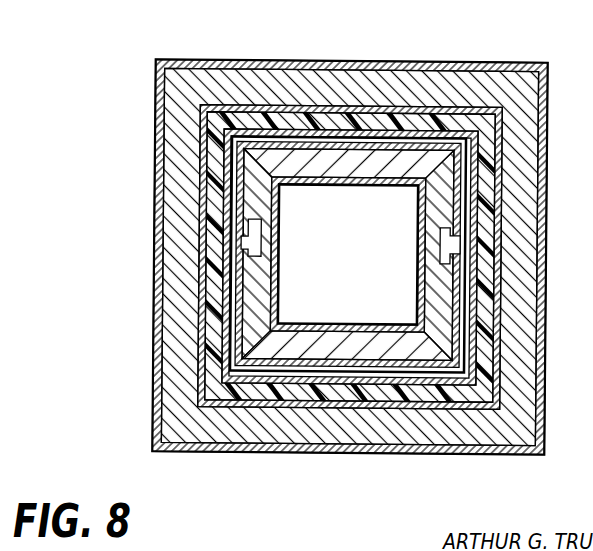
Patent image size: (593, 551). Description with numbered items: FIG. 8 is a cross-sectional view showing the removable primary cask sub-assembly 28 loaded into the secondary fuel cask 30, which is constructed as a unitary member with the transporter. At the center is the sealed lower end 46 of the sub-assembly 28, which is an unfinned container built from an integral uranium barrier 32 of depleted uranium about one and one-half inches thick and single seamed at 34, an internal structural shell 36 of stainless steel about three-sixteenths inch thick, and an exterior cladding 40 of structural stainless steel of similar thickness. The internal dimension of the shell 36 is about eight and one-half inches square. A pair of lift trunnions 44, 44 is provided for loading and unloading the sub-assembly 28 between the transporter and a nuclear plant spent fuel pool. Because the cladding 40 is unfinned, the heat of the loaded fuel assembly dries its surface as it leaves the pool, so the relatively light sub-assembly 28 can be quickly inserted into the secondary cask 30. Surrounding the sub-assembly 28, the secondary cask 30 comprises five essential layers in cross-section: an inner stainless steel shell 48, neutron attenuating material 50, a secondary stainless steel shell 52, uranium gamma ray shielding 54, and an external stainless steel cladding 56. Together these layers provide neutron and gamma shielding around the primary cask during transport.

The primary cask sub-assembly 28 is at (406, 197).
The secondary fuel cask 30 is at (442, 56).
The uranium barrier 32 is at (348, 168).
The single seam of uranium barrier 34 is at (261, 161).
The internal structural shell 36 is at (302, 330).
The exterior cladding 40 is at (367, 362).
The lift trunnions 44 is at (241, 240).
The sealed lower end 46 is at (356, 271).
The inner stainless steel shell 48 is at (261, 133).
The neutron attenuating material 50 is at (492, 236).
The secondary stainless steel shell 52 is at (314, 115).
The uranium gamma ray shielding 54 is at (178, 152).
The external stainless steel cladding 56 is at (186, 58).